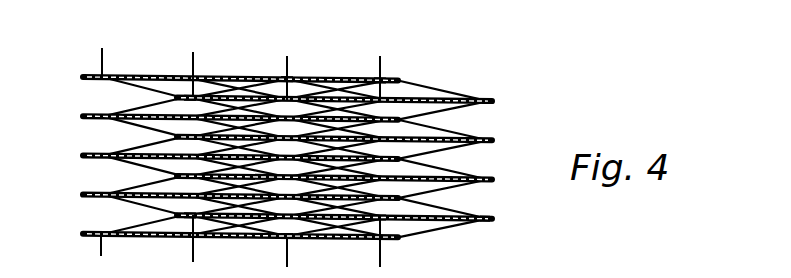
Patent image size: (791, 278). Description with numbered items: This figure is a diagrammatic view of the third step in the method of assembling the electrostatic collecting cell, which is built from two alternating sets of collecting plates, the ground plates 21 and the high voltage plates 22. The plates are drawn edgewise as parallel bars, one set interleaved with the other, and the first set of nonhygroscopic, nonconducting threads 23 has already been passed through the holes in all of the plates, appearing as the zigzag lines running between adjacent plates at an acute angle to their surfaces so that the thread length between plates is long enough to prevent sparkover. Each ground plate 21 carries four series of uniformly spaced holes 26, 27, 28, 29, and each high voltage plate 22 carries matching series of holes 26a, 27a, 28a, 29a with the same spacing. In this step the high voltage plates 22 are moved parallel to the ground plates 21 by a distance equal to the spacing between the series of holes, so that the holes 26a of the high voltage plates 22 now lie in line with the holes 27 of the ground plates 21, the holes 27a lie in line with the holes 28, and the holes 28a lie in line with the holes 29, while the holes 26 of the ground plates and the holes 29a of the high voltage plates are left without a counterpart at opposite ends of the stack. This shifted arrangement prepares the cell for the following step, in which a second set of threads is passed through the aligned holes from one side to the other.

The ground plates 21 is at (401, 80).
The high voltage plates 22 is at (496, 101).
The set of nonhygroscopic, nonconducting threads 23 is at (103, 49).
The series of holes in the ground plates 26 is at (101, 73).
The series of holes in the high voltage plates 26a is at (194, 95).
The series of holes in the ground plates 27 is at (194, 65).
The series of holes in the high voltage plates 27a is at (287, 79).
The series of holes in the ground plates 28 is at (288, 68).
The series of holes in the high voltage plates 28a is at (380, 79).
The series of holes in the ground plates 29 is at (382, 70).
The series of holes in the high voltage plates 29a is at (491, 99).